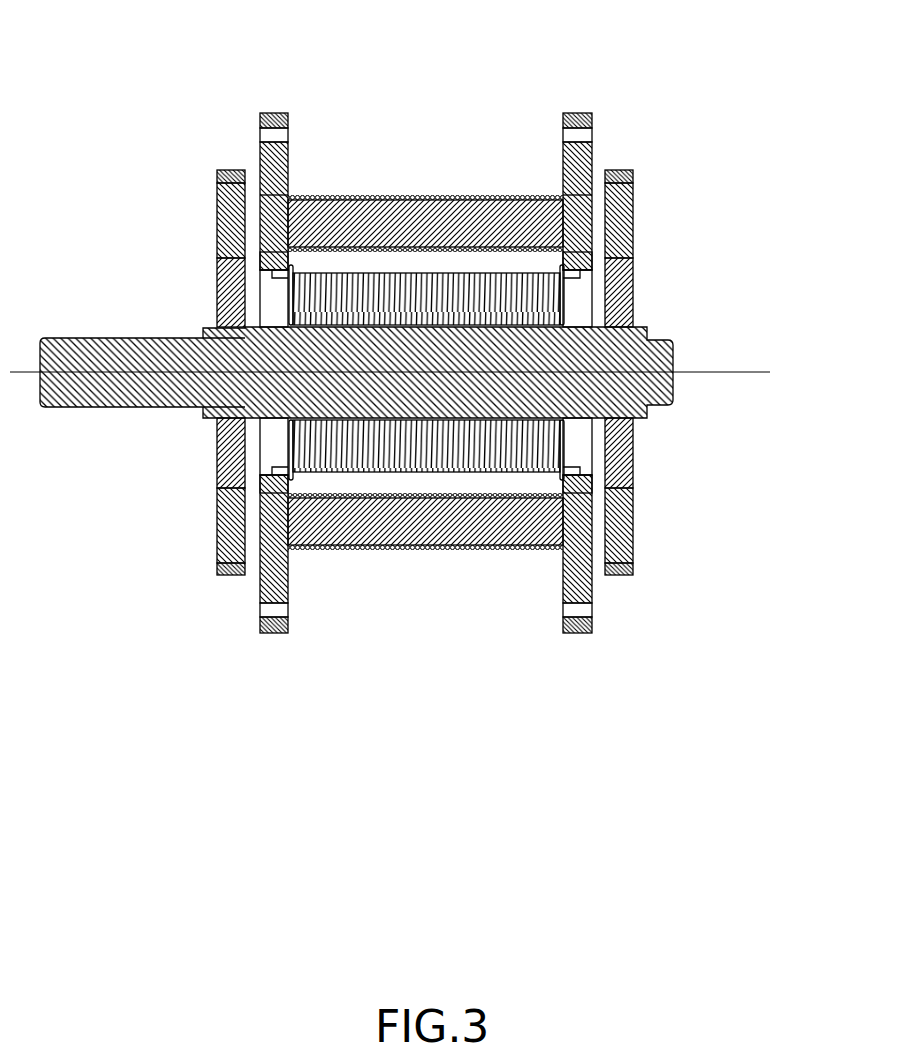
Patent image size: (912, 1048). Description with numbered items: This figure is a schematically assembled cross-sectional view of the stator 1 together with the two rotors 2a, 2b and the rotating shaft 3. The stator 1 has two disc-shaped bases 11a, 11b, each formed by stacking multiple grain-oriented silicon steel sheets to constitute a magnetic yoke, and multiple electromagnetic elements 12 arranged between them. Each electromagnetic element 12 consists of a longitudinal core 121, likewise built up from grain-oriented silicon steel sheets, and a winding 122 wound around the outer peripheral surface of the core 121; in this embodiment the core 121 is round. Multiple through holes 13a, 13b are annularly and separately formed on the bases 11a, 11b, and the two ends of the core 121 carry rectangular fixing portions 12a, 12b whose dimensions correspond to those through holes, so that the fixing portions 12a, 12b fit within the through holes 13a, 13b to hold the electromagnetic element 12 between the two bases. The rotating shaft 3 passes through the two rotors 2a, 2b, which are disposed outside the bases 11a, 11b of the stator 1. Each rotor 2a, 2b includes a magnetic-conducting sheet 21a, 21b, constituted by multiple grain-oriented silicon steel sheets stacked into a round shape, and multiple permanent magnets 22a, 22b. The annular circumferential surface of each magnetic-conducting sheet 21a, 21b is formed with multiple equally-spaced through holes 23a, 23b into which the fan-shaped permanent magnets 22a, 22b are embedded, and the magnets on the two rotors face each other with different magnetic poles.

The stator 1 is at (427, 316).
The disc-shaped base 11a is at (579, 112).
The disc-shaped base 11b is at (291, 112).
The electromagnetic element 12 is at (426, 319).
The core 121 is at (443, 209).
The winding 122 is at (356, 194).
The fixing portion 12a is at (553, 318).
The fixing portion 12b is at (289, 192).
The through hole 13a is at (610, 159).
The through hole 13b is at (268, 193).
The rotor 2a is at (680, 372).
The magnetic-conducting sheet 21a is at (656, 373).
The permanent magnet 22a is at (635, 227).
The through hole 23a is at (635, 181).
The rotor 2b is at (172, 372).
The magnetic-conducting sheet 21b is at (195, 373).
The permanent magnet 22b is at (216, 228).
The through hole 23b is at (216, 181).
The rotating shaft 3 is at (105, 336).